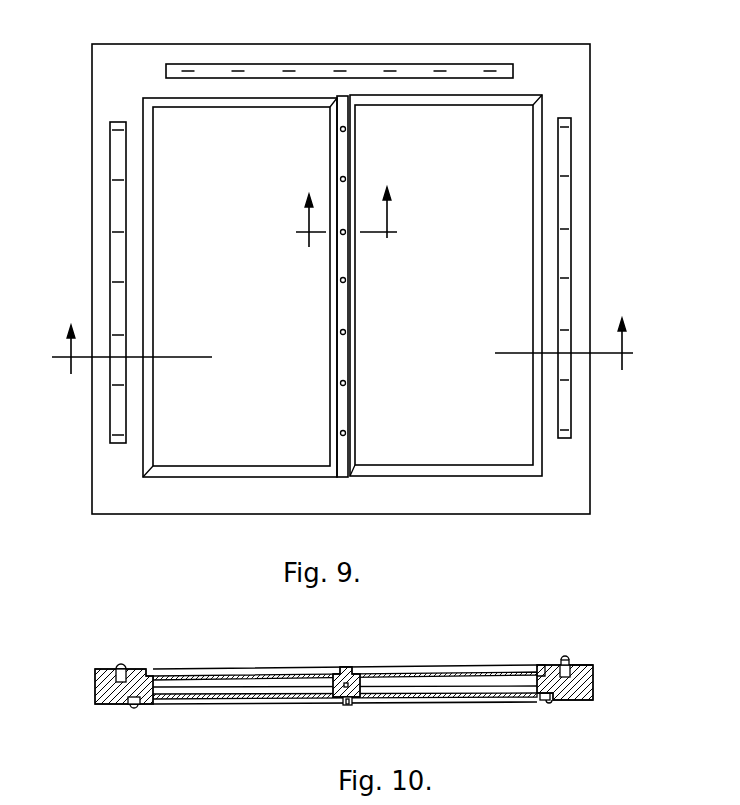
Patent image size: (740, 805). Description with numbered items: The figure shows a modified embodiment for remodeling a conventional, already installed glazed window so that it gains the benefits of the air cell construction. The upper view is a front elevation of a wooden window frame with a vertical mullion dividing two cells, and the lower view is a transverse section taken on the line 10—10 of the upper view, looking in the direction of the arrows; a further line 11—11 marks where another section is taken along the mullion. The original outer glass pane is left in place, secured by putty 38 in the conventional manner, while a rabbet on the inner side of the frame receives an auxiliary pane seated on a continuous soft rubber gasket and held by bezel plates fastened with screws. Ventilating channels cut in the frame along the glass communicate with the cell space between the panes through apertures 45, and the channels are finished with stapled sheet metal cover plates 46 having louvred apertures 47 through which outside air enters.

In FIG. 9, the sheet metal cover plate 46 is at (217, 66).
In FIG. 9, the louvred aperture 47 is at (568, 170).
In FIG. 10, the louvred aperture 47 is at (121, 663).
In FIG. 9, the section line 10— 10 is at (342, 337).
In FIG. 9, the section line 11— 11 is at (346, 206).
In FIG. 10, the putty 38 is at (541, 670).
In FIG. 10, the aperture 45 is at (562, 663).